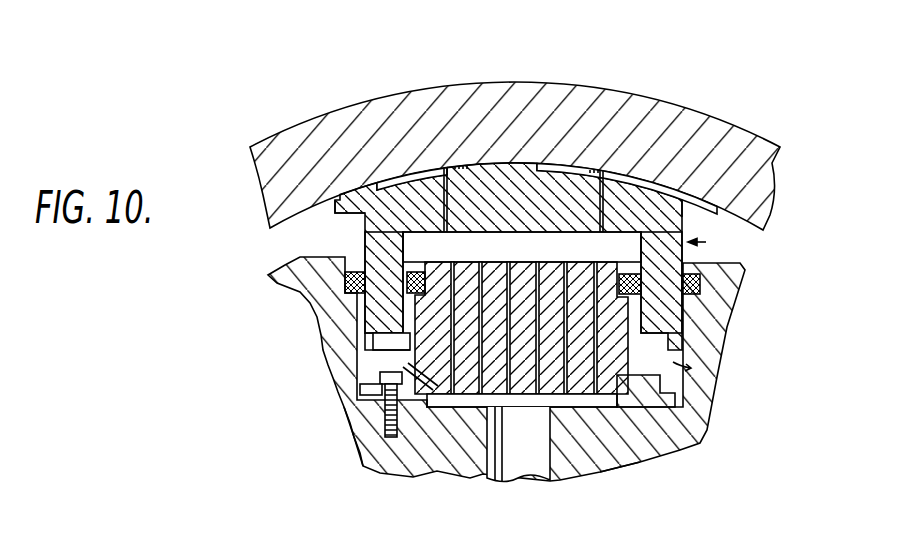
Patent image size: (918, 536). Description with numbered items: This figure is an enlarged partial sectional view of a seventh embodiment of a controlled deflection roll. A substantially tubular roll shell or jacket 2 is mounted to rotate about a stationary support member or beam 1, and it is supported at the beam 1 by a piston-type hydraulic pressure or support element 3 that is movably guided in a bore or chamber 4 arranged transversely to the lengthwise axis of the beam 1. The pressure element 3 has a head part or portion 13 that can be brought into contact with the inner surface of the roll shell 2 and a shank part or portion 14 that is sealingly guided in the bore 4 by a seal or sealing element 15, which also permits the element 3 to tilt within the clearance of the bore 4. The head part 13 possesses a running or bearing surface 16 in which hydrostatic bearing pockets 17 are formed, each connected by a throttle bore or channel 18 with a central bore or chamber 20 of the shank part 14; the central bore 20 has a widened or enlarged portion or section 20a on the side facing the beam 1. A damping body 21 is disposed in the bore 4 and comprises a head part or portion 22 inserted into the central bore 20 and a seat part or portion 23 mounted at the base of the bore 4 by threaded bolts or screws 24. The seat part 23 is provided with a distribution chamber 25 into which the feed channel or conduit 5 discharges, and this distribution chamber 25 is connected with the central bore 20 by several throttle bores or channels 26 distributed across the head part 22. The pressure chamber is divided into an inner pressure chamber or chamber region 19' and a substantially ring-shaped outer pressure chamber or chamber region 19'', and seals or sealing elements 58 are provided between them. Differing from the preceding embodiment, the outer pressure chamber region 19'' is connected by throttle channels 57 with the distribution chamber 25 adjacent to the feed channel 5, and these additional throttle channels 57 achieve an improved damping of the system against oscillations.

The stationary support member or beam 1 is at (740, 272).
The tubular roll shell or jacket 2 is at (750, 140).
The hydraulic pressure or support element 3 is at (709, 242).
The bore or chamber 4 is at (683, 377).
The feed channel or conduit 5 is at (537, 473).
The head part or portion 13 is at (713, 210).
The shank part or portion 14 is at (672, 308).
The seal or sealing element 15 is at (700, 287).
The running or bearing surface 16 is at (360, 187).
The hydrostatic bearing pocket 17 is at (430, 175).
The throttle bore or channel 18 is at (613, 183).
The inner pressure chamber or chamber region 19' is at (605, 142).
The outer pressure chamber or chamber region 19'' is at (726, 378).
The central bore or chamber 20 is at (357, 236).
The widened or enlarged portion or section 20a is at (392, 357).
The damping body 21 is at (385, 375).
The head part or portion 22 is at (400, 307).
The seat part or portion 23 is at (365, 393).
The threaded bolt or screw 24 is at (391, 430).
The distribution chamber 25 is at (447, 400).
The throttle bore or channel 26 is at (483, 260).
The throttle channel 57 is at (380, 467).
The seal or sealing element 58 is at (363, 262).